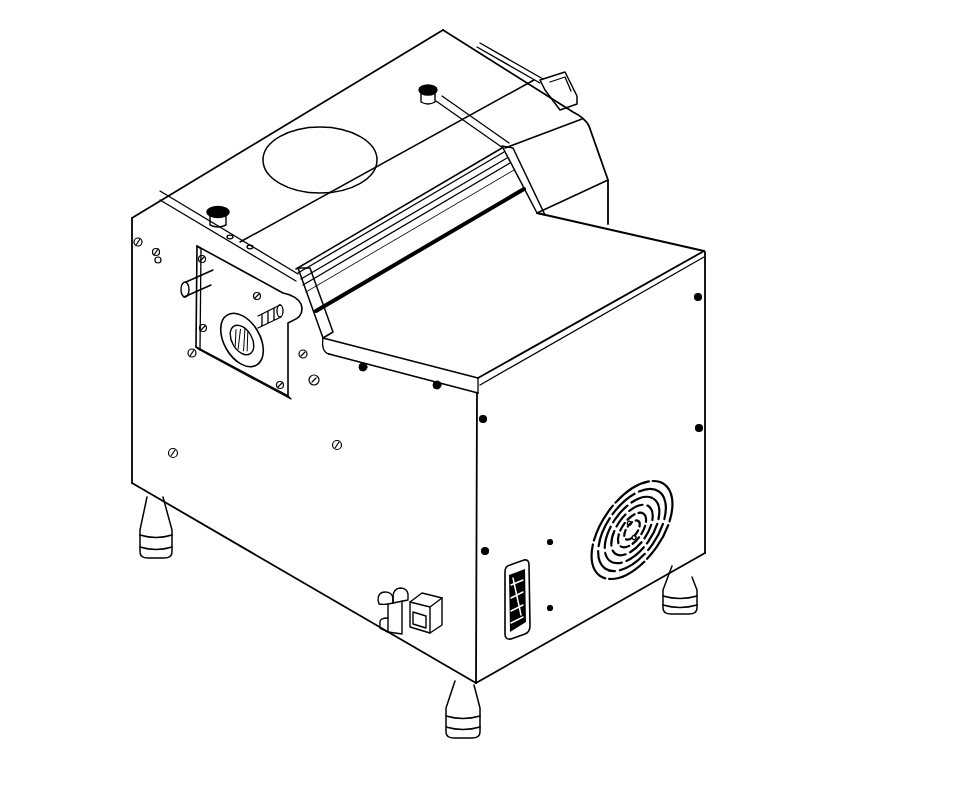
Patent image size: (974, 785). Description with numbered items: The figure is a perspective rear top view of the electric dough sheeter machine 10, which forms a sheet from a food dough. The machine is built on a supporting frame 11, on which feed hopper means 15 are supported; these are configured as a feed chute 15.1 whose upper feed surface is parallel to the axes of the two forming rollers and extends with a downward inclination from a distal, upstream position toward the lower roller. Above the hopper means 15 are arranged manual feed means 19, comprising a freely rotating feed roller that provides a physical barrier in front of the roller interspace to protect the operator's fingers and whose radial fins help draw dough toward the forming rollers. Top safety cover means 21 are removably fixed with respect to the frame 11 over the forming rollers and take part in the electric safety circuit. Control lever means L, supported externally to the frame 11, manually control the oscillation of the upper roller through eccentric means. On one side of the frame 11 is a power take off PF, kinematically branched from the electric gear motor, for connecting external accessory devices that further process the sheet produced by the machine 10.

The electric dough sheeter machine 10 is at (758, 317).
The supporting frame 11 is at (312, 594).
The feed hopper means 15 is at (619, 276).
The feed chute 15.1 is at (526, 312).
The manual feed means 19 is at (440, 253).
The top safety cover means 21 is at (248, 186).
The control lever means L is at (528, 70).
The power take off PF is at (228, 364).